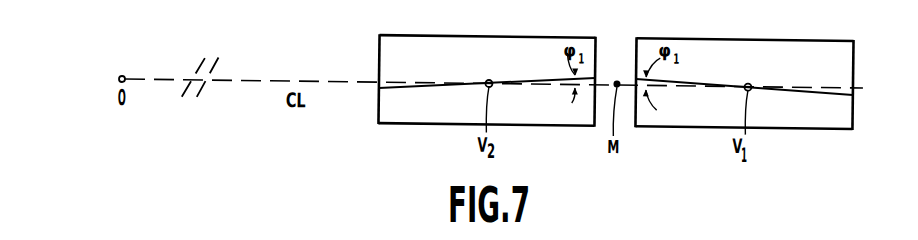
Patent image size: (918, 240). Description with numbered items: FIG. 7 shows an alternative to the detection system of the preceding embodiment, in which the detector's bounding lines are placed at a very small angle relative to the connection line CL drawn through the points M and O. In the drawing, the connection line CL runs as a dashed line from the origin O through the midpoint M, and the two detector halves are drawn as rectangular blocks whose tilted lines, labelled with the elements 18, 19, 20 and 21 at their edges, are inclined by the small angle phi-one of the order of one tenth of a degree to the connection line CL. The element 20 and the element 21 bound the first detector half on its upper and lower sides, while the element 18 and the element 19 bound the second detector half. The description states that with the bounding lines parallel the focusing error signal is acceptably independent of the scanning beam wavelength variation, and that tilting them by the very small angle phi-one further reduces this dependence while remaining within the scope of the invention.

The upper reflecting surface of second mirror block 18 is at (843, 49).
The lower reflecting surface of second mirror block 19 is at (843, 103).
The upper reflecting surface of first mirror block 20 is at (392, 43).
The lower reflecting surface of first mirror block 21 is at (392, 103).